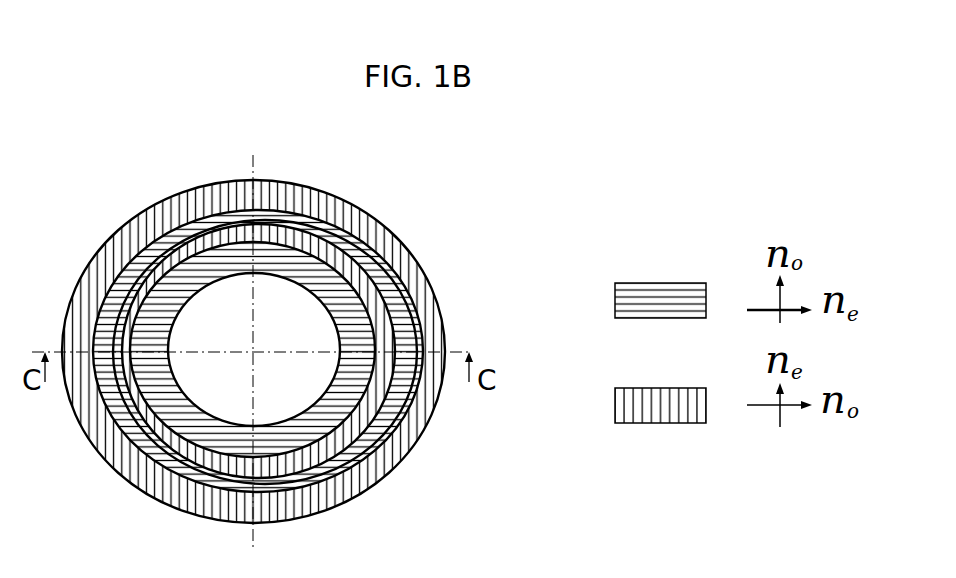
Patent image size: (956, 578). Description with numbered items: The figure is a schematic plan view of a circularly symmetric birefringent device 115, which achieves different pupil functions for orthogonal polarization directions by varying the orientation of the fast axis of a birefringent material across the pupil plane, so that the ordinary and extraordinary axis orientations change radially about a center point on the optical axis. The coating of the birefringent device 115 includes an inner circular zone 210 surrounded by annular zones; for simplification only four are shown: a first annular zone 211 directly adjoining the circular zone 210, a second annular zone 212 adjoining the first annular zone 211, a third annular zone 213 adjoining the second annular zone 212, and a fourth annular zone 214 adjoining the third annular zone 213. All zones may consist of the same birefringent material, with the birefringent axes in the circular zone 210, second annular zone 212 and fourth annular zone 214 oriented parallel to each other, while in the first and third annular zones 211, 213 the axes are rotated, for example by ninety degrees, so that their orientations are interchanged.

The birefringent device 115 is at (377, 212).
The inner circular zone 210 is at (278, 396).
The first annular zone 211 is at (377, 245).
The second annular zone 212 is at (415, 290).
The third annular zone 213 is at (440, 317).
The fourth annular zone 214 is at (423, 343).